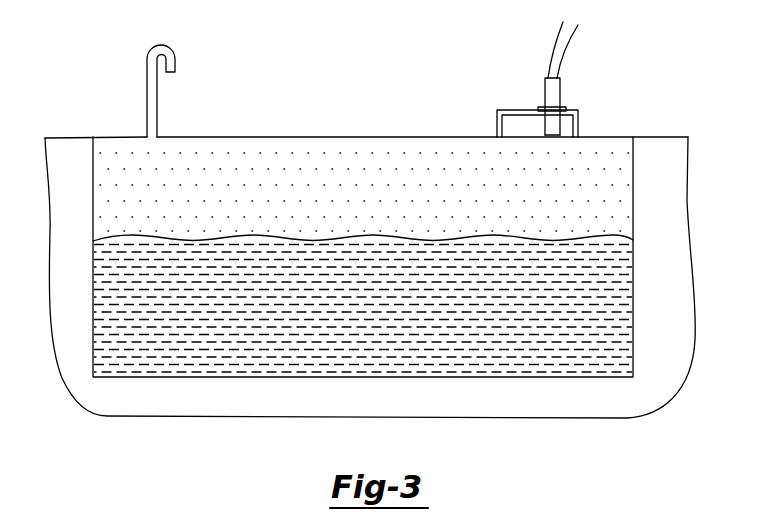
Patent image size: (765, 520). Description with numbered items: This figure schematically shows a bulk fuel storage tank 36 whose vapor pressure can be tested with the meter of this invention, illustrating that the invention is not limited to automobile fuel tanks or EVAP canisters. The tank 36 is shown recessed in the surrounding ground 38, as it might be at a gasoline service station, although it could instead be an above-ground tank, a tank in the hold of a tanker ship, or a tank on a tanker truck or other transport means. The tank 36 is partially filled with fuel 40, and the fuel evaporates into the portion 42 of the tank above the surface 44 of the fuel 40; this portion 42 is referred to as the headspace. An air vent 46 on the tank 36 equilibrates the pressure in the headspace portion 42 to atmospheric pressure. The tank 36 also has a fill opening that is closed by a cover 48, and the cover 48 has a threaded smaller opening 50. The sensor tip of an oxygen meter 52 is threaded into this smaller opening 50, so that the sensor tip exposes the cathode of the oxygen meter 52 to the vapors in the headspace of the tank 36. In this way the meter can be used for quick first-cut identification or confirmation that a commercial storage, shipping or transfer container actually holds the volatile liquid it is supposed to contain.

The bulk fuel storage tank 36 is at (638, 198).
The surrounding ground 38 is at (664, 137).
The fuel 40 is at (533, 363).
The portion of tank above fuel surface 42 is at (270, 148).
The surface of fuel 44 is at (212, 252).
The air vent 46 is at (166, 61).
The cover 48 is at (580, 125).
The threaded smaller opening 50 is at (549, 118).
The oxygen meter 52 is at (555, 97).